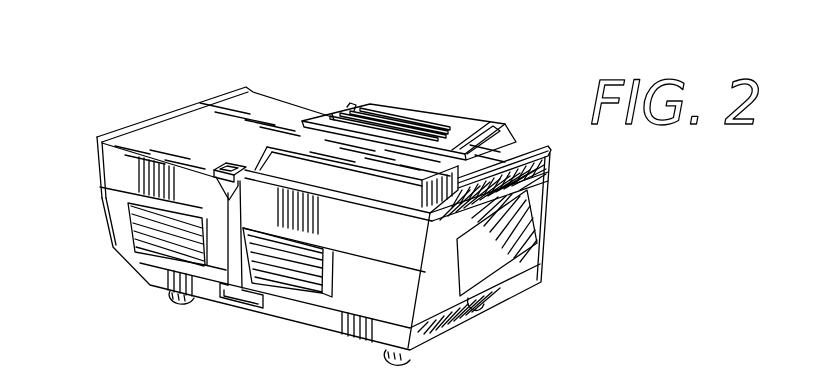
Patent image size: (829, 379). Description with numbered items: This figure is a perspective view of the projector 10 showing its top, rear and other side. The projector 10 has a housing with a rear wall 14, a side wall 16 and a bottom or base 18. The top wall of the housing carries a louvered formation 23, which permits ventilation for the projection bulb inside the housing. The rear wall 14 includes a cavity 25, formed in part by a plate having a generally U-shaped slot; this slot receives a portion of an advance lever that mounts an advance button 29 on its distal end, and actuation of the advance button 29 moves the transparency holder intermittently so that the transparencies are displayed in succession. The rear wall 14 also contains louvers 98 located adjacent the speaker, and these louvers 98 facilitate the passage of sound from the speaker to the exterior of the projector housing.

The projector 10 is at (186, 71).
The rear wall 14 is at (125, 166).
The side wall 16 is at (472, 263).
The base 18 is at (307, 320).
The louvered formation 23 is at (403, 132).
The cavity 25 is at (217, 294).
The advance button 29 is at (216, 167).
The louvers 98 is at (155, 240).